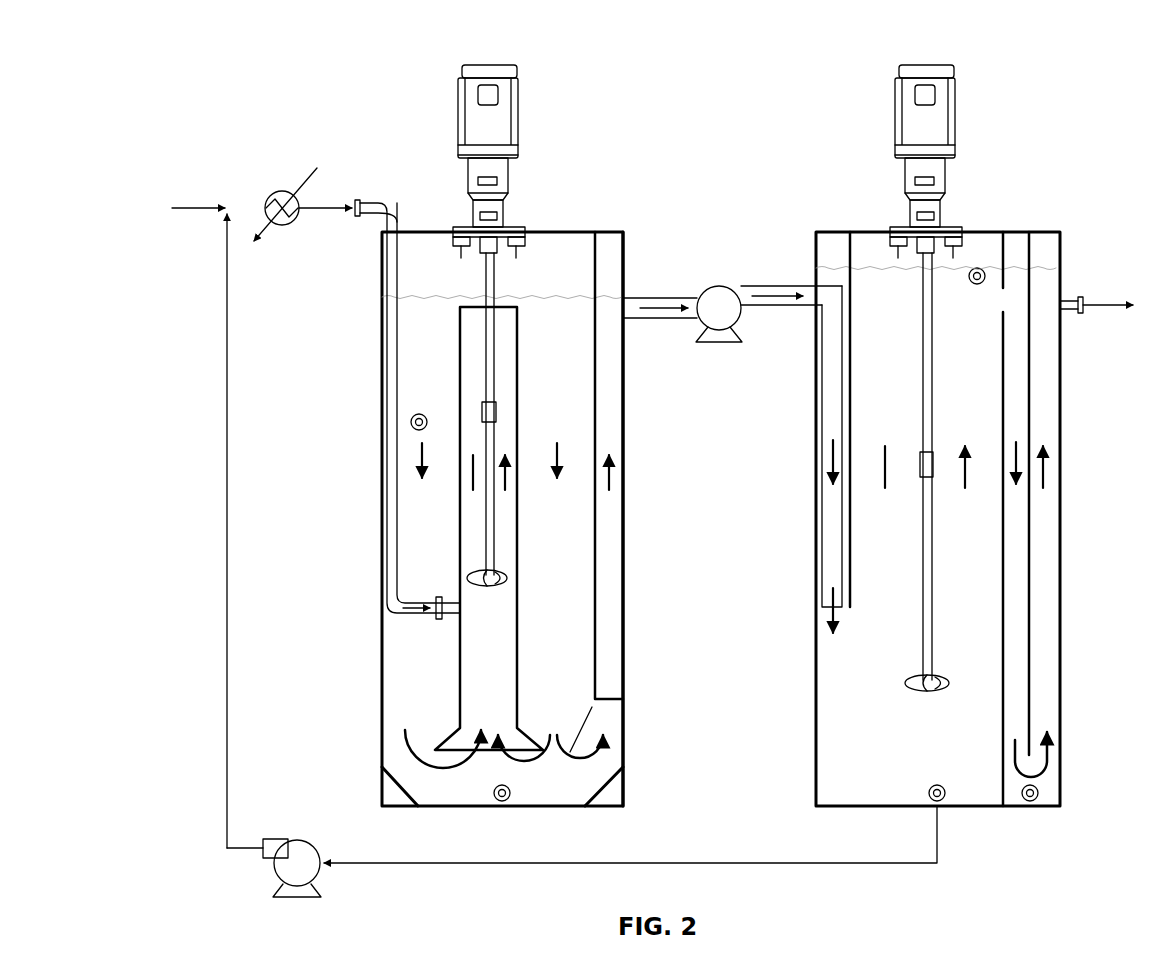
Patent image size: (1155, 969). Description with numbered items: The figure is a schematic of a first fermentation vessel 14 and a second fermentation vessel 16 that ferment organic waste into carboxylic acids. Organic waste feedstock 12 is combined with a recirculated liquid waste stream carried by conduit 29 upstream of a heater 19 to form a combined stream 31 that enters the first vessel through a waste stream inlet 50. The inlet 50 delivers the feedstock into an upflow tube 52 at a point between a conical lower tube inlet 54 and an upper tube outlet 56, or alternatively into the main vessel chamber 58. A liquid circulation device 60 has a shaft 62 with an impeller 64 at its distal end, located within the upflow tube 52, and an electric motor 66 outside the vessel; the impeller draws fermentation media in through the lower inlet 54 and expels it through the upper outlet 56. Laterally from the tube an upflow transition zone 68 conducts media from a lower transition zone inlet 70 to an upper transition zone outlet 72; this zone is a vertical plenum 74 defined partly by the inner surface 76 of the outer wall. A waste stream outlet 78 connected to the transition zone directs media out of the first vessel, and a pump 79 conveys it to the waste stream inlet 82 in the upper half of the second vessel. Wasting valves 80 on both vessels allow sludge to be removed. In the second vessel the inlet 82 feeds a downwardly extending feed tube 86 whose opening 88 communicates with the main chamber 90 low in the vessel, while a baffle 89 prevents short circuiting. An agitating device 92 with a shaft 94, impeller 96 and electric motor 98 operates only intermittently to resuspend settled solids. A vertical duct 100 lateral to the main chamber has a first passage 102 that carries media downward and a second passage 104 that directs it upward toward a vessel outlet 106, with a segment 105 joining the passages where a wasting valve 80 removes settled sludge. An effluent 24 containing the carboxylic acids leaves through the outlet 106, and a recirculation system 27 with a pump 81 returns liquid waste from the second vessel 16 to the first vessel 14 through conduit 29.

The organic waste feedstock 12 is at (193, 205).
The first fermentation vessel 14 is at (380, 265).
The second fermentation vessel 16 is at (815, 250).
The heater 19 is at (270, 192).
The effluent 24 is at (1105, 312).
The recirculation system 27 is at (847, 875).
The recirculated liquid waste stream conduit 29 is at (227, 540).
The combined stream 31 is at (322, 205).
The waste stream inlet 50 is at (375, 203).
The upflow tube 52 is at (460, 680).
The lower tube inlet 54 is at (487, 752).
The upper tube outlet 56 is at (455, 297).
The main vessel chamber 58 is at (420, 552).
The liquid circulation device 60 is at (530, 125).
The shaft 62 is at (490, 512).
The impeller 64 is at (505, 585).
The electric motor 66 is at (458, 108).
The upflow transition zone 68 is at (613, 408).
The lower transition zone inlet 70 is at (598, 722).
The upper transition zone outlet 72 is at (605, 300).
The vertical plenum 74 is at (603, 377).
The inner surface of outer wall 76 is at (617, 590).
The waste stream outlet 78 is at (650, 300).
The pump 79 is at (738, 325).
The wasting valves 80 is at (412, 426).
The recirculation pump 81 is at (312, 843).
The waste stream inlet 82 is at (770, 286).
The feed tube 86 is at (830, 390).
The opening 88 is at (823, 603).
The baffle 89 is at (850, 412).
The main chamber 90 is at (917, 508).
The agitating device 92 is at (972, 103).
The shaft 94 is at (922, 605).
The impeller 96 is at (903, 680).
The electric motor 98 is at (956, 148).
The vertical duct 100 is at (1002, 568).
The first passage 102 is at (1020, 543).
The second passage 104 is at (1048, 587).
The segment 105 is at (1040, 777).
The vessel outlet 106 is at (1070, 300).